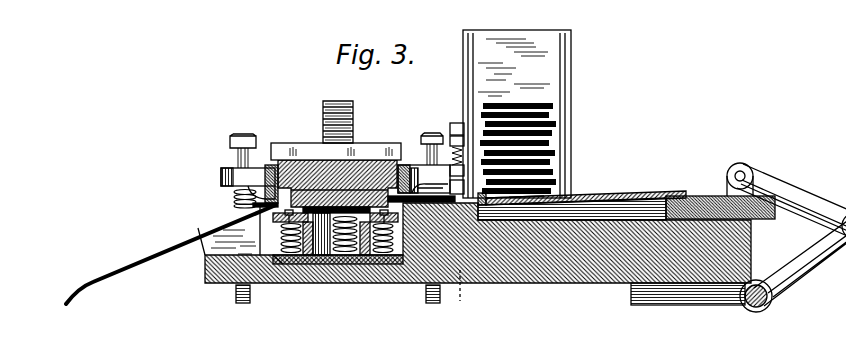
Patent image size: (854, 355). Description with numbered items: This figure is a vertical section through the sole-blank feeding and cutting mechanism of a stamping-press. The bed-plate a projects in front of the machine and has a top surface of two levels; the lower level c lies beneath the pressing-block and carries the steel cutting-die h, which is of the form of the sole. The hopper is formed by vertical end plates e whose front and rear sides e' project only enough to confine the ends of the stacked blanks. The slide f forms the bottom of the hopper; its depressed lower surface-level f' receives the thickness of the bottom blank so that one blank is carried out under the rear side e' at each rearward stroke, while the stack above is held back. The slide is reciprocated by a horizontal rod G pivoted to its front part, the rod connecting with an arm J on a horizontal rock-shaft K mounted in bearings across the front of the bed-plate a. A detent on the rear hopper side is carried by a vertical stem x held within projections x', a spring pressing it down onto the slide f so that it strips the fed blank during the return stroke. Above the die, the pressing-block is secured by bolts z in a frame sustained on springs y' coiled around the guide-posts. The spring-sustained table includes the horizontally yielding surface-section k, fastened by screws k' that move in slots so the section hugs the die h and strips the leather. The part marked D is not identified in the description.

The bed-plate a is at (478, 253).
The vertical stem x is at (466, 295).
The projections x' is at (171, 254).
The lower level of bed-plate c is at (235, 230).
The cutting-die h is at (335, 232).
The bolts z is at (366, 186).
The plate D is at (310, 151).
The springs y' is at (234, 198).
The surface-section k is at (457, 142).
The screws k' is at (450, 156).
The hopper end plates e is at (517, 114).
The hopper front and rear sides e' is at (518, 115).
The feeding-slide f is at (582, 194).
The lower surface-level of slide f' is at (515, 207).
The horizontal rod G is at (786, 201).
The arm J is at (800, 262).
The rock-shaft K is at (701, 308).